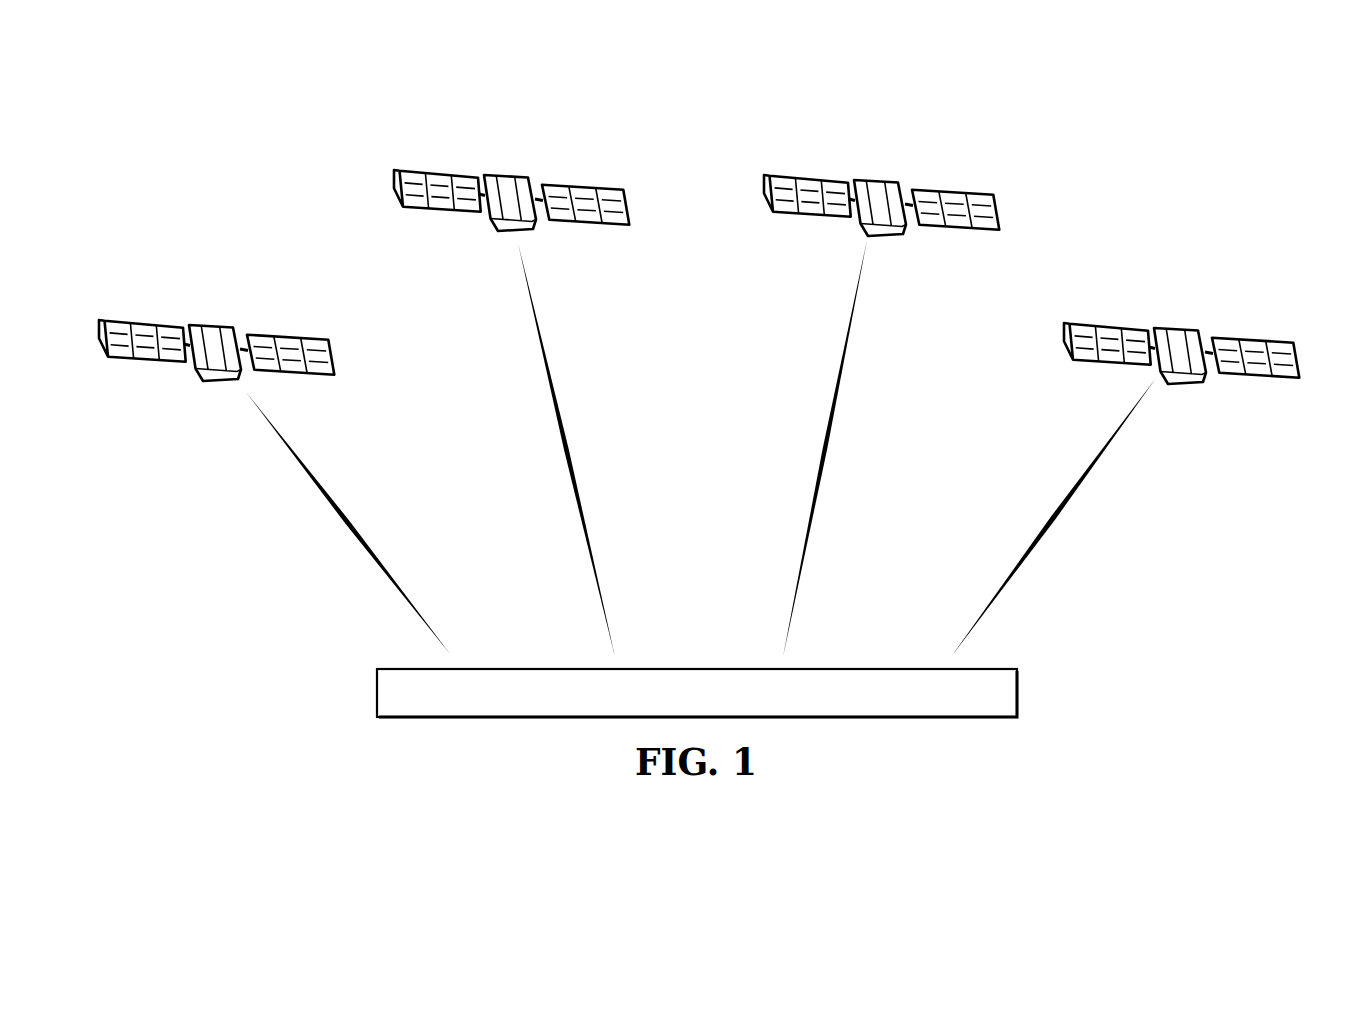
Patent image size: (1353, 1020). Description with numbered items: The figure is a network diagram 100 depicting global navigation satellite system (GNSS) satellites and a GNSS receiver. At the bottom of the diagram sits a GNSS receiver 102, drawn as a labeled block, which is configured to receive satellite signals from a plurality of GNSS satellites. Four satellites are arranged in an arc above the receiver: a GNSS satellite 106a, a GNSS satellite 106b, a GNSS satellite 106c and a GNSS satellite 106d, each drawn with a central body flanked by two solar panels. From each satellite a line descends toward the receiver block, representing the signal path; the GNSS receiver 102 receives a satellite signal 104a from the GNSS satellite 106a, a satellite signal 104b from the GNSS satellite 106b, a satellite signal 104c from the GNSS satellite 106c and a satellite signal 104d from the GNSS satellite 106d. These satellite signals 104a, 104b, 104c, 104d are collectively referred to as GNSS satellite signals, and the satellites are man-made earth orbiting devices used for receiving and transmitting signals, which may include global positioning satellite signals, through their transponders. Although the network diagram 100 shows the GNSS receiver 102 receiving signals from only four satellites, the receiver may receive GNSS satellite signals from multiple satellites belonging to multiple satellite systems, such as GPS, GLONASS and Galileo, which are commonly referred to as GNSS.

The network diagram 100 is at (1146, 155).
The GNSS receiver 102 is at (377, 688).
The satellite signal 104a is at (352, 535).
The satellite signal 104b is at (570, 463).
The satellite signal 104c is at (827, 468).
The satellite signal 104d is at (1048, 527).
The GNSS satellite 106a is at (140, 321).
The GNSS satellite 106b is at (435, 172).
The GNSS satellite 106c is at (952, 187).
The GNSS satellite 106d is at (1253, 337).